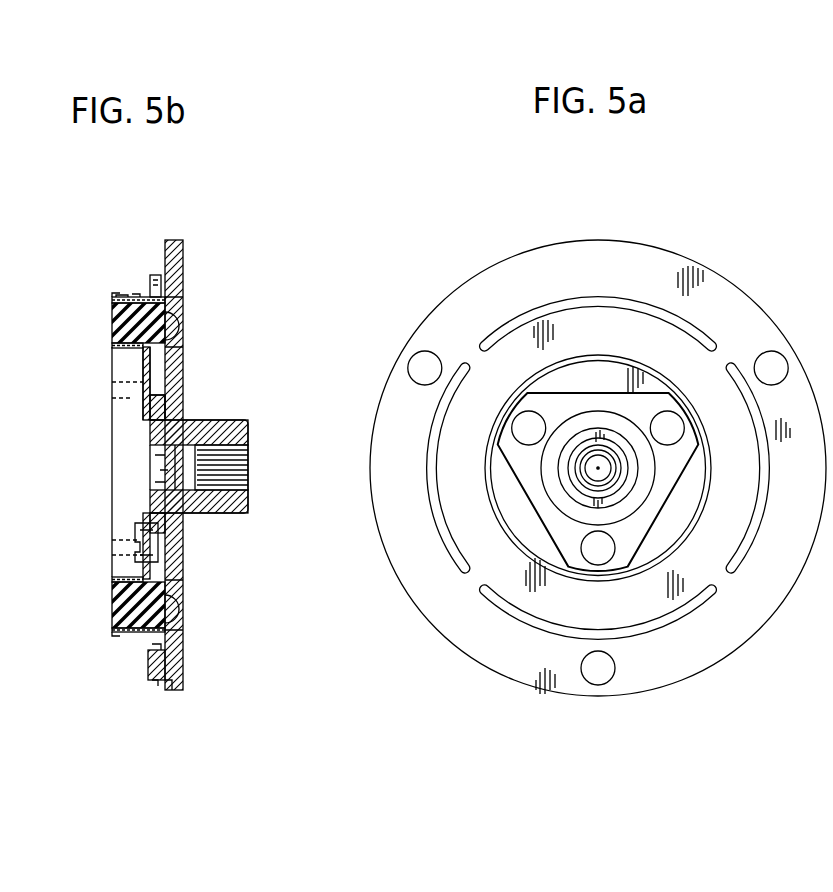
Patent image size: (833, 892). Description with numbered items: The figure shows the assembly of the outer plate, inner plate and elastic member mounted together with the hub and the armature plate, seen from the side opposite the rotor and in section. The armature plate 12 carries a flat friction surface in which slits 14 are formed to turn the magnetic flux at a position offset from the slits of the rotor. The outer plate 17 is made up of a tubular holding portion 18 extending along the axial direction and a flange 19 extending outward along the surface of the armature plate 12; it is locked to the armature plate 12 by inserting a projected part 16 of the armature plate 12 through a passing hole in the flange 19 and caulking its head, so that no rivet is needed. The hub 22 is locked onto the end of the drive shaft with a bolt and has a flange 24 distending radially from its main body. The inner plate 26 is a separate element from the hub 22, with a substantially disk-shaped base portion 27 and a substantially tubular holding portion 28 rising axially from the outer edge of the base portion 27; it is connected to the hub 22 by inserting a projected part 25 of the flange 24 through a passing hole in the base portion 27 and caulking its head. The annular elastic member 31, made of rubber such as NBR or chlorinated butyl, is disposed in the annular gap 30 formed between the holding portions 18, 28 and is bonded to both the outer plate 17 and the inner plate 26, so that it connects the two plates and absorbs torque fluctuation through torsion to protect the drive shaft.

In FIG. 5a, the armature plate 12 is at (625, 262).
In FIG. 5b, the armature plate 12 is at (168, 246).
In FIG. 5a, the slits 14 is at (541, 310).
In FIG. 5b, the slits 14 is at (178, 298).
In FIG. 5a, the projected part 16 is at (420, 367).
In FIG. 5b, the projected part 16 is at (153, 662).
In FIG. 5b, the outer plate 17 is at (128, 297).
In FIG. 5b, the holding portion 18 is at (120, 297).
In FIG. 5b, the flange 19 is at (148, 292).
In FIG. 5a, the hub 22 is at (632, 478).
In FIG. 5b, the hub 22 is at (223, 423).
In FIG. 5a, the flange 24 is at (540, 503).
In FIG. 5b, the flange 24 is at (178, 402).
In FIG. 5a, the projected part 25 is at (525, 425).
In FIG. 5b, the projected part 25 is at (137, 538).
In FIG. 5b, the inner plate 26 is at (118, 367).
In FIG. 5b, the base portion 27 is at (143, 410).
In FIG. 5b, the holding portion 28 is at (133, 355).
In FIG. 5b, the annular gap 30 is at (110, 307).
In FIG. 5b, the elastic member 31 is at (115, 334).